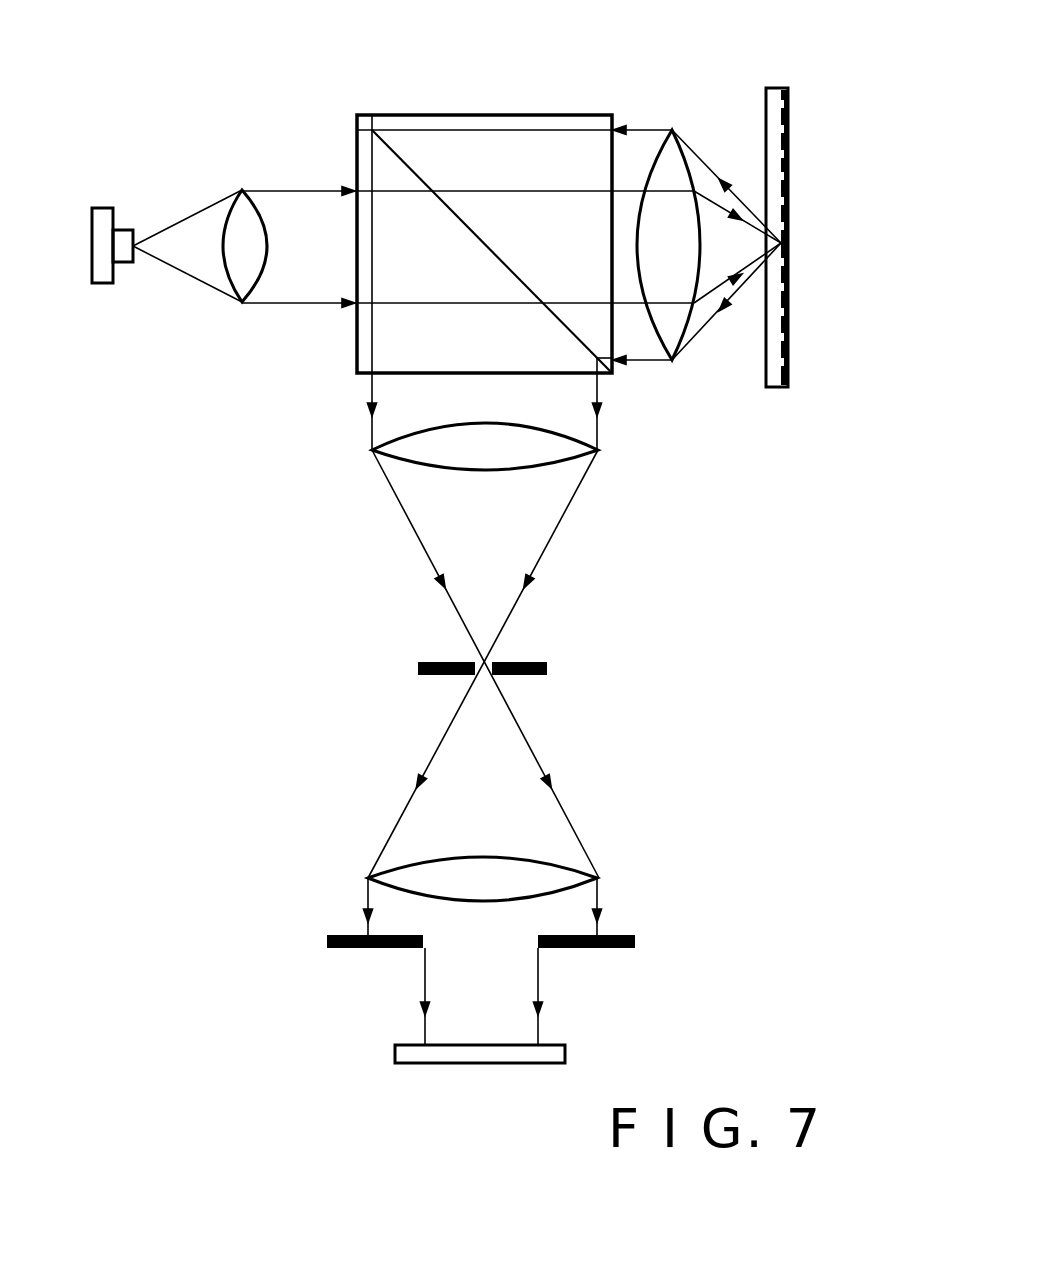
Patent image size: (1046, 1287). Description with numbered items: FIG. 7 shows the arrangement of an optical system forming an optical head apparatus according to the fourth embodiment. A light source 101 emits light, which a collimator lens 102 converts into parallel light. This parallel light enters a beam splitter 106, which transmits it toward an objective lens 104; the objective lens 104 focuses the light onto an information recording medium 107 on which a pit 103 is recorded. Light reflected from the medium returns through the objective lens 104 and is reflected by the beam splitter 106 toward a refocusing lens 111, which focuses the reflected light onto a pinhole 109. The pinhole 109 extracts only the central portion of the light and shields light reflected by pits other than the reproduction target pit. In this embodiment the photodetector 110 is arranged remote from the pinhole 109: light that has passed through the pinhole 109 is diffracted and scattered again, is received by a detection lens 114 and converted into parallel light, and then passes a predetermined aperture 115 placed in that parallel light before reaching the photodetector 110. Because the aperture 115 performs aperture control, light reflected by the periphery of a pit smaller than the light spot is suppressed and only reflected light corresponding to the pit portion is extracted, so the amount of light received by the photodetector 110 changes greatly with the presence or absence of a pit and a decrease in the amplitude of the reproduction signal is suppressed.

The light source 101 is at (93, 283).
The collimator lens 102 is at (241, 218).
The pit 103 is at (790, 122).
The objective lens 104 is at (670, 140).
The beam splitter 106 is at (437, 128).
The information recording medium 107 is at (775, 390).
The pinhole 109 is at (547, 658).
The photodetector 110 is at (395, 1057).
The refocusing lens 111 is at (578, 447).
The detection lens 114 is at (392, 880).
The aperture 115 is at (327, 944).